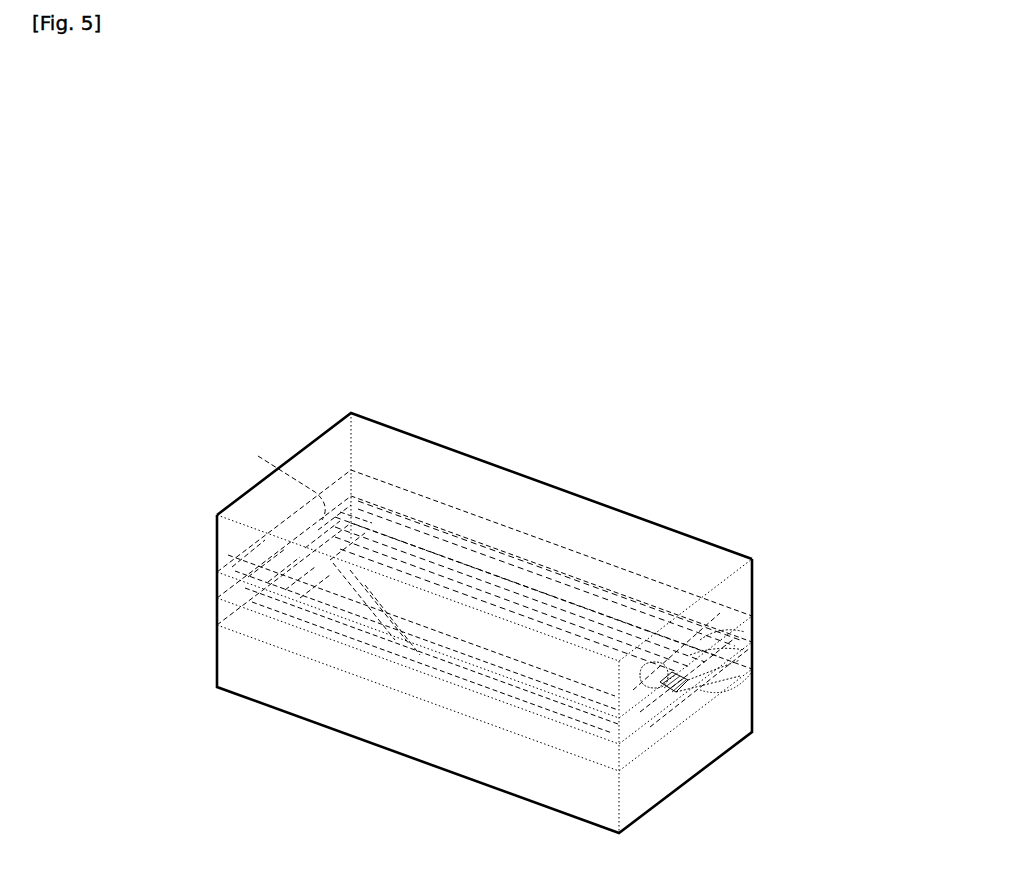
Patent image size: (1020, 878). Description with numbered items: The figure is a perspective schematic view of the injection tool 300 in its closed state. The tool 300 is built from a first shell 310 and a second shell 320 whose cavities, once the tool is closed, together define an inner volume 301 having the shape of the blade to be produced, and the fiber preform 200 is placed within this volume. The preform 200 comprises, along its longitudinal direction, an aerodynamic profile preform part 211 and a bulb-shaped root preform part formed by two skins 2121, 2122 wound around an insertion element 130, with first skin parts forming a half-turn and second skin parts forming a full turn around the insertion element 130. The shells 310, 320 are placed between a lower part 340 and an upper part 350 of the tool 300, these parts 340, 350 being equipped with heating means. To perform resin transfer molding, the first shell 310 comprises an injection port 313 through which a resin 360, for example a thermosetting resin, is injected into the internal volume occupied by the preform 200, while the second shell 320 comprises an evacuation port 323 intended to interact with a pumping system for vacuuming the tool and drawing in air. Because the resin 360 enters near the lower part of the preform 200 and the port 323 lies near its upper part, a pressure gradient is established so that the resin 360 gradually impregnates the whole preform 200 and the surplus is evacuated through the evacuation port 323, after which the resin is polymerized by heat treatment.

The injection tool 300 is at (165, 548).
The first shell 310 is at (216, 615).
The second shell 320 is at (216, 583).
The evacuation port 323 is at (290, 523).
The inner volume 301 is at (378, 658).
The injection port 313 is at (664, 722).
The fiber preform 200 is at (548, 617).
The aerodynamic profile preform part 211 is at (445, 587).
The first skin 2121 is at (735, 630).
The second skin 2122 is at (730, 647).
The insertion element 130 is at (737, 685).
The lower part 340 is at (738, 718).
The upper part 350 is at (720, 546).
The resin 360 is at (668, 722).